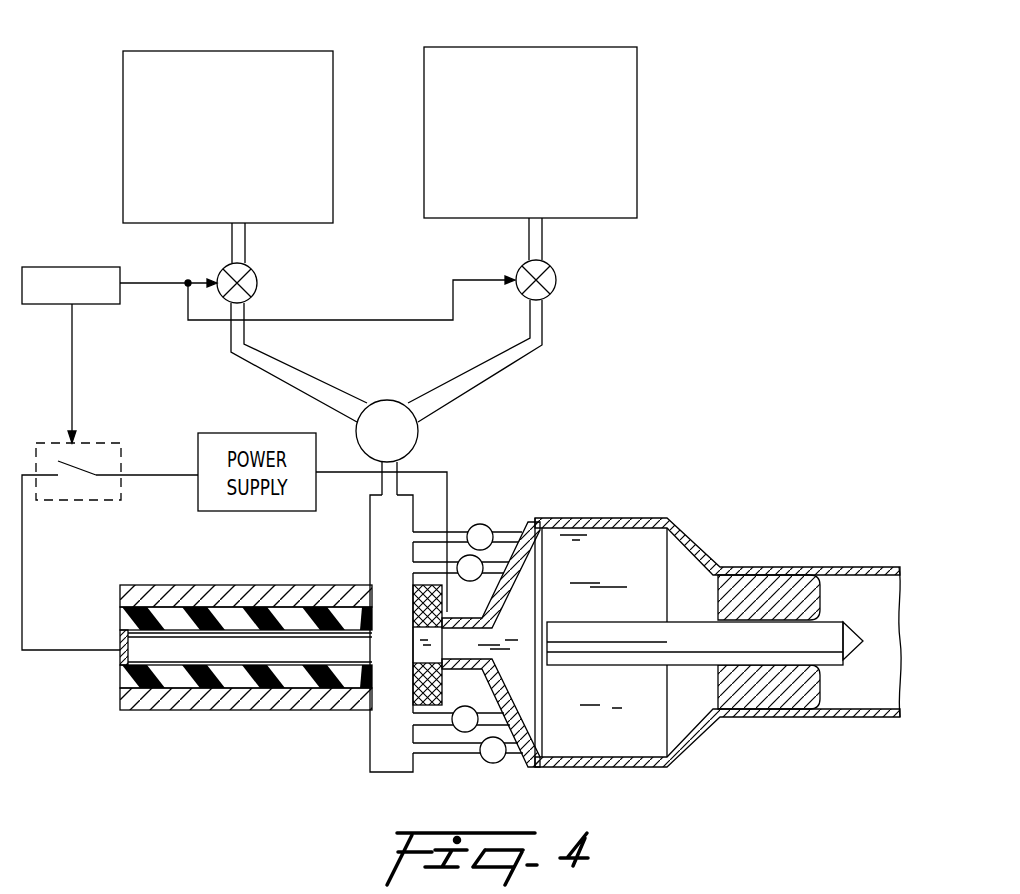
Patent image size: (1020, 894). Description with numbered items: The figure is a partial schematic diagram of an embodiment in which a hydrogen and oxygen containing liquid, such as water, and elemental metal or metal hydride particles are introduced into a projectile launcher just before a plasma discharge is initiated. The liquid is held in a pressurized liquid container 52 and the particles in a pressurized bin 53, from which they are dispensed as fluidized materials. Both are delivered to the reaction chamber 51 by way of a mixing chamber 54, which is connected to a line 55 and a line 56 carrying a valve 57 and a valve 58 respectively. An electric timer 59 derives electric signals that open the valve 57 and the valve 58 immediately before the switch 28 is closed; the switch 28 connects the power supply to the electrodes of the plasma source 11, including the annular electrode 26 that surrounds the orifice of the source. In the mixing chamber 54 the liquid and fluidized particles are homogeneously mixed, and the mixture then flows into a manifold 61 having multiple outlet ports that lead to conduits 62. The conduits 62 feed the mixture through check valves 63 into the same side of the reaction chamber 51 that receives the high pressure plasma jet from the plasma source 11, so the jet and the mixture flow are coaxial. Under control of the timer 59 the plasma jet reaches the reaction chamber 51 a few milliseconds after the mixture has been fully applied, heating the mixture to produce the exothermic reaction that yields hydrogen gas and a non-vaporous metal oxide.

The plasma source 11 is at (300, 718).
The annular electrode 26 is at (441, 618).
The switch 28 is at (83, 490).
The reaction chamber 51 is at (636, 538).
The pressurized liquid container 52 is at (228, 62).
The pressurized bin 53 is at (558, 55).
The mixing chamber 54 is at (409, 440).
The line 55 is at (291, 372).
The line 56 is at (494, 368).
The valve 57 is at (254, 282).
The valve 58 is at (556, 278).
The electric timer 59 is at (60, 267).
The manifold 61 is at (378, 533).
The conduits 62 is at (513, 527).
The check valves 63 is at (480, 522).